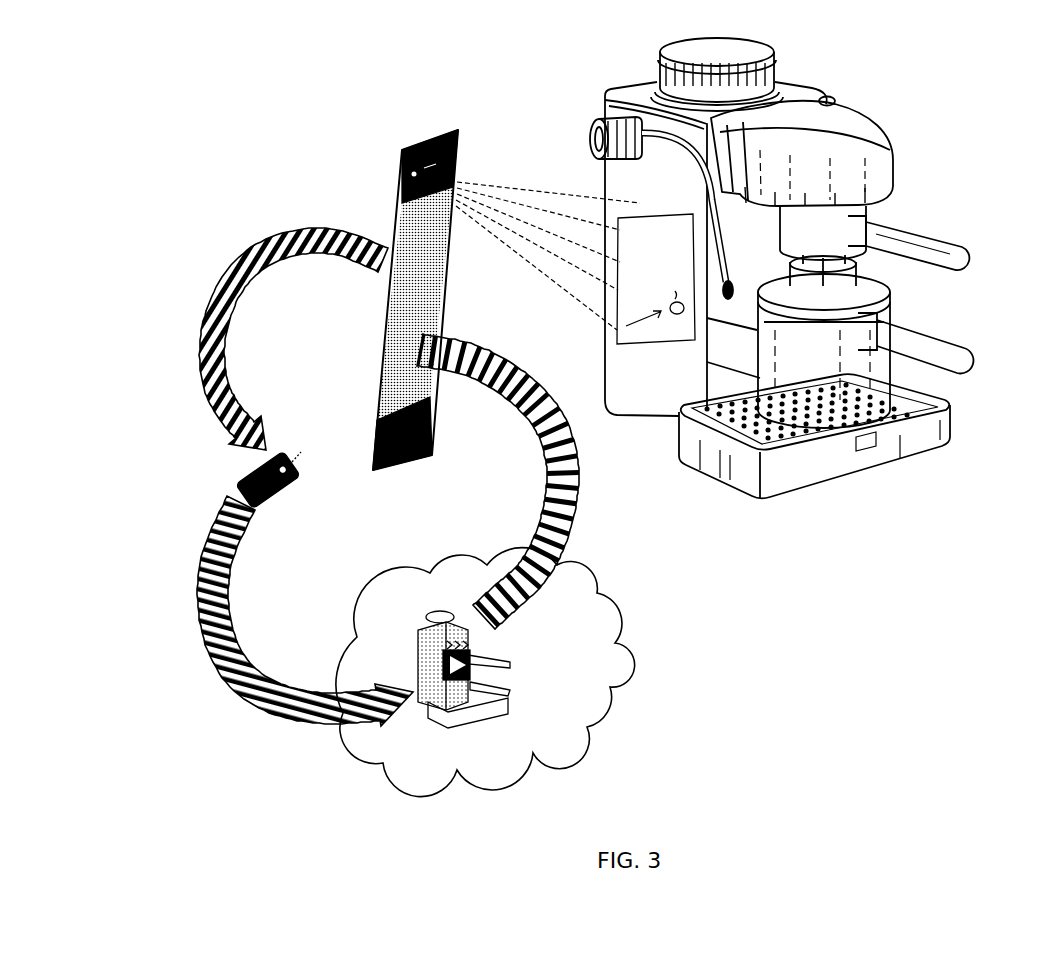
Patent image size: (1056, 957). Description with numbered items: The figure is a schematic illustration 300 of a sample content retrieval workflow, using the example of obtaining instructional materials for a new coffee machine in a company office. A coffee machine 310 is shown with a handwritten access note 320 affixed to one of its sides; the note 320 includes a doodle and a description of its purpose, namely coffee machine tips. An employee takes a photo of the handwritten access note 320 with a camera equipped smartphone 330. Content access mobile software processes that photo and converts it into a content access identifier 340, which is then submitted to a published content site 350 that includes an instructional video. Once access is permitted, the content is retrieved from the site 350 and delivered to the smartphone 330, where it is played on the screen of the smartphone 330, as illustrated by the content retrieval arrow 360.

The schematic illustration 300 is at (1025, 123).
The coffee machine 310 is at (848, 96).
The handwritten access note 320 is at (627, 333).
The camera equipped smartphone 330 is at (462, 158).
The content access identifier 340 is at (281, 440).
The published content site 350 is at (410, 663).
The content retrieval arrow 360 is at (537, 522).